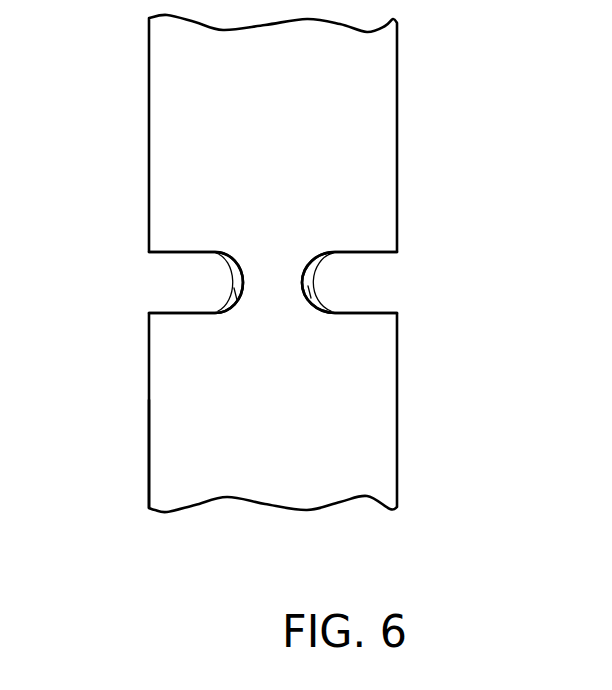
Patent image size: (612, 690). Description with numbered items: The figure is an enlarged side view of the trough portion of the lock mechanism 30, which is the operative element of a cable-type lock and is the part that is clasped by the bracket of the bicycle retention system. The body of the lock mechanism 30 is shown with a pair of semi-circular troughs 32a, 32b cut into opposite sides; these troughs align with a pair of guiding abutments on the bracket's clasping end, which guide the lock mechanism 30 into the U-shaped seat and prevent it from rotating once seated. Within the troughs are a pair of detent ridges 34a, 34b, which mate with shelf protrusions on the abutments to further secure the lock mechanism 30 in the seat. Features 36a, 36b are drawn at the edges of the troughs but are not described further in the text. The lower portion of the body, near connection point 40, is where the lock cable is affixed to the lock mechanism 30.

The lock mechanism 30 is at (90, 393).
The semi-circular trough 32a is at (140, 290).
The semi-circular trough 32b is at (410, 292).
The detent ridge 34a is at (233, 302).
The detent ridge 34b is at (312, 300).
The first notch rounded edge 36a is at (226, 266).
The second notch rounded edge 36b is at (325, 266).
The connection point 40 is at (190, 538).